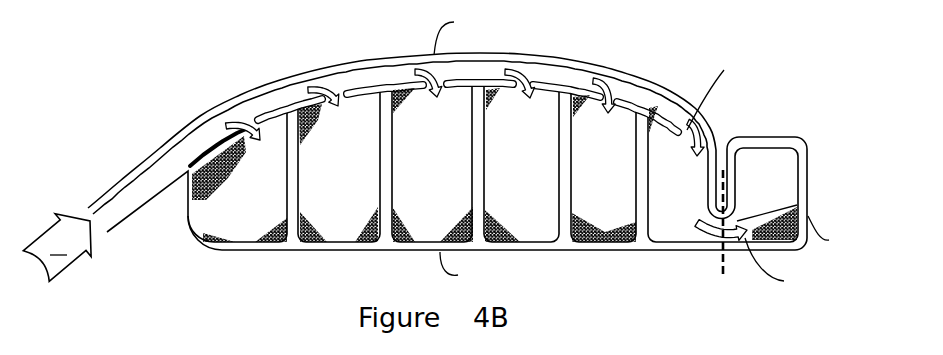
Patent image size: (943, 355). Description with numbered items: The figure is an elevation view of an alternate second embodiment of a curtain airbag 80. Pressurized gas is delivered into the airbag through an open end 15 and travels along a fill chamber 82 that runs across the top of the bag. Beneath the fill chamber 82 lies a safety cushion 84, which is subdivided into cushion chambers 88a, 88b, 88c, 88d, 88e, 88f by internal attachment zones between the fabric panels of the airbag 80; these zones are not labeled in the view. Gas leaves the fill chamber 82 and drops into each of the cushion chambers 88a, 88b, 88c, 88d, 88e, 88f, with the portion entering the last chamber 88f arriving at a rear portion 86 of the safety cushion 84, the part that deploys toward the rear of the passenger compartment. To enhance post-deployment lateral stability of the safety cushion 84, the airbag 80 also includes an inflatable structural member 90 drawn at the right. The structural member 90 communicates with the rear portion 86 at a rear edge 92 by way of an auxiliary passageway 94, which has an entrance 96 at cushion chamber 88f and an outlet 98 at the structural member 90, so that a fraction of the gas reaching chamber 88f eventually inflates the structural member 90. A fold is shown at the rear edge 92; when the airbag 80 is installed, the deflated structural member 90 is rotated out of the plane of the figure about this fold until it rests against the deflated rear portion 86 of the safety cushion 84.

The curtain airbag 80 is at (205, 98).
The fill chamber 82 is at (150, 181).
The open end 15 is at (88, 220).
The safety cushion 84 is at (523, 153).
The rear portion 86 is at (678, 215).
The cushion chamber 88a is at (231, 198).
The cushion chamber 88b is at (326, 198).
The cushion chamber 88c is at (416, 198).
The cushion chamber 88d is at (511, 198).
The cushion chamber 88e is at (591, 198).
The cushion chamber 88f is at (665, 198).
The inflatable structural member 90 is at (768, 181).
The rear edge 92 is at (719, 160).
The auxiliary passageway 94 is at (731, 246).
The entrance 96 is at (703, 238).
The outlet 98 is at (797, 205).